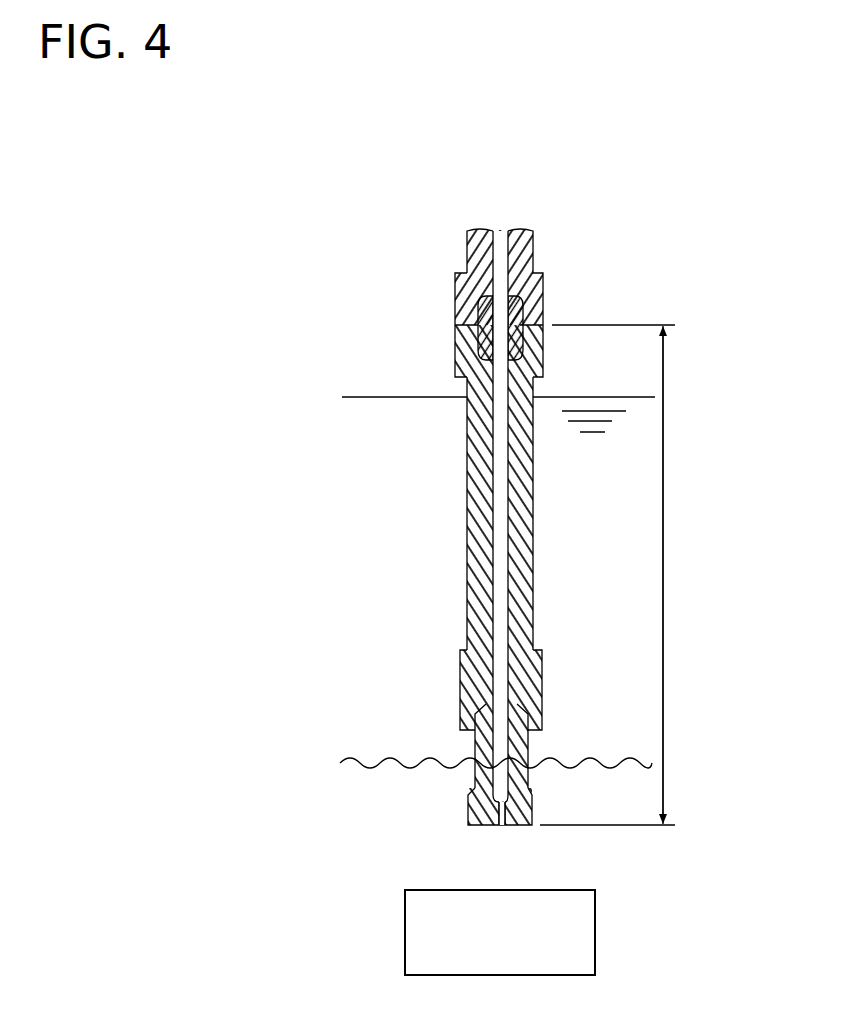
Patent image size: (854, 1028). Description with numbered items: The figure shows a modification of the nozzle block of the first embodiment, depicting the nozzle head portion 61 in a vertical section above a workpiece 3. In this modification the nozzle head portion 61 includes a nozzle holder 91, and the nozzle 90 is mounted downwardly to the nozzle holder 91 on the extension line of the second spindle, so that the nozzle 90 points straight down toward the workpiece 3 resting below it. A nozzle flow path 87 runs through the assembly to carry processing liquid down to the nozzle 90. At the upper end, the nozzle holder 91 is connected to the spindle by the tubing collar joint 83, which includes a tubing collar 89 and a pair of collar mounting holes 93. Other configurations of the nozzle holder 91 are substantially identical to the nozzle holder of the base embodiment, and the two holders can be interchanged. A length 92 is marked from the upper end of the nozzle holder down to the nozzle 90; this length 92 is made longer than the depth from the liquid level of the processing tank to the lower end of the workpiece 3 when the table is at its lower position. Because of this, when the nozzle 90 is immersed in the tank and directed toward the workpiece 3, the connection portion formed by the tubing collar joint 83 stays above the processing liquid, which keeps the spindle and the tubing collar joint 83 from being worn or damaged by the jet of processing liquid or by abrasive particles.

The nozzle head portion 61 is at (598, 219).
The tubing collar joint 83 is at (450, 325).
The nozzle flow path 87 is at (500, 493).
The nozzle holder 91 is at (467, 537).
The length 92 is at (664, 568).
The collar mounting holes 93 is at (488, 712).
The tubing collar 89 is at (512, 708).
The nozzle 90 is at (450, 803).
The workpiece 3 is at (412, 890).